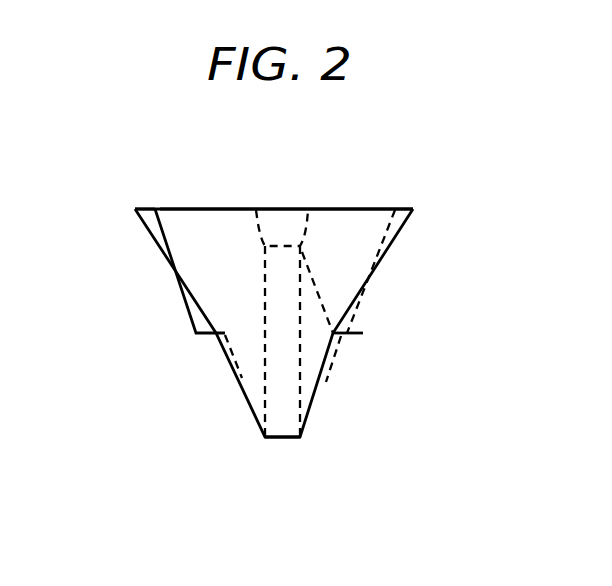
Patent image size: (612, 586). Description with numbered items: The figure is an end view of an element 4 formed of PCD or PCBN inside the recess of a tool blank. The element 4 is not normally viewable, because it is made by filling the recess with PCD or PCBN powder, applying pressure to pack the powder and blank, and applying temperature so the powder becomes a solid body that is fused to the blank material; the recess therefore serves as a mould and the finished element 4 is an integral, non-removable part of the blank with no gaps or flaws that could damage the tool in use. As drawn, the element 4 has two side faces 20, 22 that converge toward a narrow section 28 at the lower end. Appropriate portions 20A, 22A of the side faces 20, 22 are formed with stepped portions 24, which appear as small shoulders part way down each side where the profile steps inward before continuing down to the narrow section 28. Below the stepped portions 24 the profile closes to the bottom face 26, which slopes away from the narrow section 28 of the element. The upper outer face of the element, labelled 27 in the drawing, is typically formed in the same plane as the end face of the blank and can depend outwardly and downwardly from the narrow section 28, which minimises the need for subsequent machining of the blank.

The element 4 is at (338, 272).
The side face 20 is at (181, 288).
The portion of side face 20A is at (143, 233).
The side face 22 is at (400, 240).
The portion of side face 22A is at (352, 337).
The stepped portion 24 is at (207, 336).
The bottom face 26 is at (278, 440).
The top rim 27 is at (202, 208).
The narrow section 28 is at (287, 226).